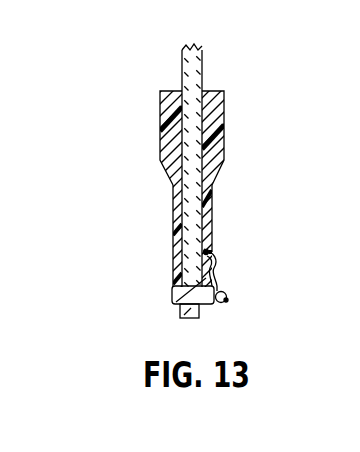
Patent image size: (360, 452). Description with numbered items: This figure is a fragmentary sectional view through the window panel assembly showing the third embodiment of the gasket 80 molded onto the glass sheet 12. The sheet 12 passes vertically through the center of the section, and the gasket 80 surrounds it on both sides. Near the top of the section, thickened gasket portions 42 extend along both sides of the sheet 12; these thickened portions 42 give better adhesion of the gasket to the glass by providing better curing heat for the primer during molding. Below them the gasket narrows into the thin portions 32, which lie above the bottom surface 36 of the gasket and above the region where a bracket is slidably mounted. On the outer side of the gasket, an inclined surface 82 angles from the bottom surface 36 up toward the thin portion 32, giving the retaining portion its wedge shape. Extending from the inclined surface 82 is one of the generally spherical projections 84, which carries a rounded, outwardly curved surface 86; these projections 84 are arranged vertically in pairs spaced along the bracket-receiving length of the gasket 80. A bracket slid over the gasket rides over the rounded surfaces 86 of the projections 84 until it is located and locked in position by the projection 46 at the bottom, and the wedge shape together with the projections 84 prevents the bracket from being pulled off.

The sheet 12 is at (203, 82).
The thin portions 32 is at (172, 208).
The bottom surface 36 is at (210, 306).
The thickened gasket portions 42 is at (168, 112).
The projection 46 is at (180, 316).
The third embodiment of the gasket 80 is at (283, 131).
The inclined surface 82 is at (216, 280).
The spherical projections 84 is at (215, 267).
The rounded outwardly curved surfaces 86 is at (210, 253).